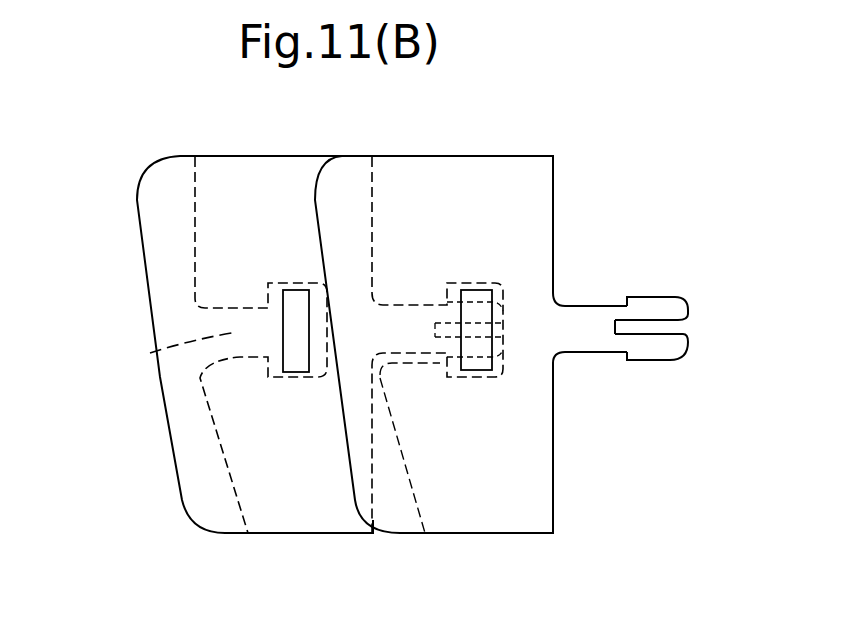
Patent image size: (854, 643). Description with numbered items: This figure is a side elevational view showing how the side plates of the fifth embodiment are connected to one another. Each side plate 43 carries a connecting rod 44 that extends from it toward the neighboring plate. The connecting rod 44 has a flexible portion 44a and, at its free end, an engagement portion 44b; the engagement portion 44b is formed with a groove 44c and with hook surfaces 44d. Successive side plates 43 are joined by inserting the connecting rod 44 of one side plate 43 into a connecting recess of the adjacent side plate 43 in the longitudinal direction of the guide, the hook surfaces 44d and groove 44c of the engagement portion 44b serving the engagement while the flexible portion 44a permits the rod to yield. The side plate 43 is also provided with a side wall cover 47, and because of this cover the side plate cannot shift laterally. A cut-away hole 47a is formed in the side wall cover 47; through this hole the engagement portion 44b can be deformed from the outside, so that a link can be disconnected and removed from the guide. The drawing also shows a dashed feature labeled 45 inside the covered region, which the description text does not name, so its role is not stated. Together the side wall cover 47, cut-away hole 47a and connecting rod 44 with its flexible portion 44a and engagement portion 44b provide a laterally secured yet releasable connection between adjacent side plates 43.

The side plate 43 is at (533, 193).
The connecting rod 44 is at (661, 323).
The flexible portion 44a is at (585, 337).
The engagement portion 44b is at (667, 300).
The groove 44c is at (648, 330).
The hook surfaces 44d is at (615, 360).
The wire 45 is at (150, 353).
The side wall cover 47 is at (163, 243).
The cut-away hole 47a is at (295, 297).